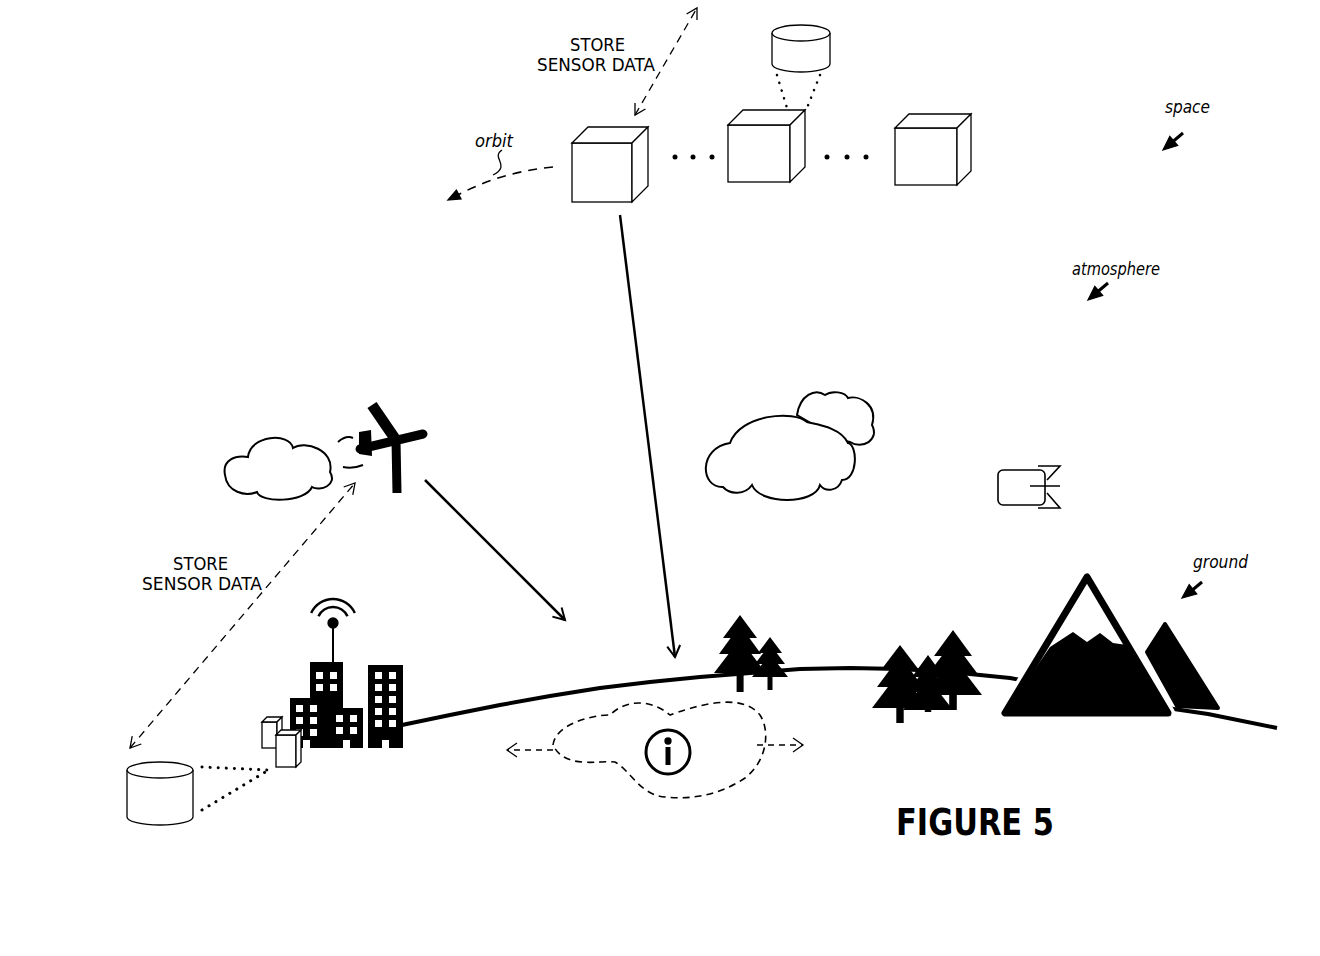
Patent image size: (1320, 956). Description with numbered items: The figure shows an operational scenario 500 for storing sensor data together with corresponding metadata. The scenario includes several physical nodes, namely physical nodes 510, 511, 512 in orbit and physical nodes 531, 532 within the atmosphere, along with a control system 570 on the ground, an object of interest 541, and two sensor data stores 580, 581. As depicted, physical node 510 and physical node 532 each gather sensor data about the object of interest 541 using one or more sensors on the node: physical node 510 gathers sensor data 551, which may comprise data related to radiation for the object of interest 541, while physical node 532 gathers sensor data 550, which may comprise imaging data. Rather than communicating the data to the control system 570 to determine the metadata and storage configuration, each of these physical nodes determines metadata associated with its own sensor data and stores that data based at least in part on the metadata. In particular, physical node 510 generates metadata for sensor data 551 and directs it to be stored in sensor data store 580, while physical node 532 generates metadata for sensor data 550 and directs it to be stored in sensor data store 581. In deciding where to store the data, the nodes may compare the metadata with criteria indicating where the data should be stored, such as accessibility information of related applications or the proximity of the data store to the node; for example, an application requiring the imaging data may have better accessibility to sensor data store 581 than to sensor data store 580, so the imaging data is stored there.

The operational scenario 500 is at (290, 127).
The physical node 510 is at (620, 183).
The physical node 511 is at (777, 170).
The physical node 512 is at (943, 170).
The sensor data store 580 is at (814, 65).
The physical node 532 is at (410, 430).
The physical node 531 is at (1052, 451).
The sensor data 550 is at (591, 586).
The sensor data 551 is at (741, 560).
The control system 570 is at (400, 801).
The sensor data store 581 is at (174, 810).
The object of interest 541 is at (652, 865).